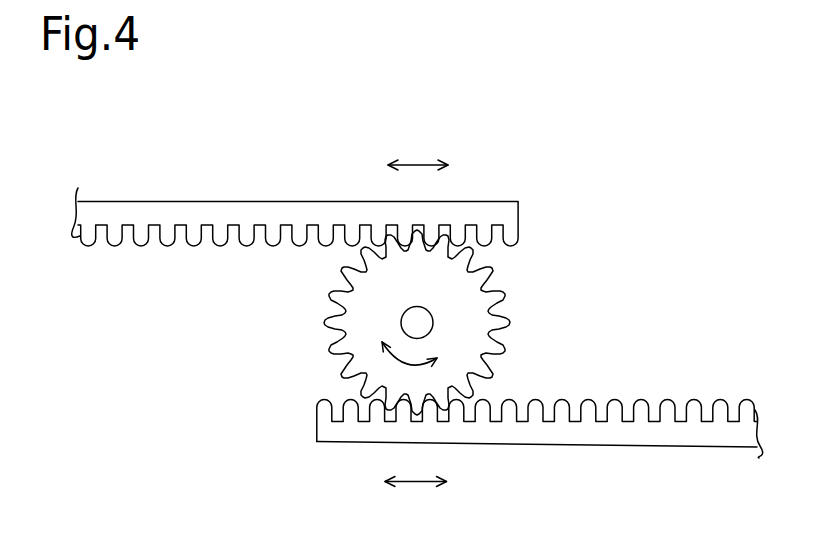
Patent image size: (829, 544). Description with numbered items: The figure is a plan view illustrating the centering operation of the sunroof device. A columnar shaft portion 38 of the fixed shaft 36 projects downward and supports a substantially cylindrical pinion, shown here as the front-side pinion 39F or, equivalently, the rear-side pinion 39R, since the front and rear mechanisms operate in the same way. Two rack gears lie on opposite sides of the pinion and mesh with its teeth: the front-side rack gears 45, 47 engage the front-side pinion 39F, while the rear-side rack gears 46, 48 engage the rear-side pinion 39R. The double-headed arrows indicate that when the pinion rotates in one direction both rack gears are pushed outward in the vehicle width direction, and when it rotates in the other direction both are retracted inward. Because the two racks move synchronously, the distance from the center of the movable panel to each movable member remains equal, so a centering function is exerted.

The fixed shaft 36 is at (418, 318).
The shaft portion 38 is at (501, 300).
The front-side pinion 39F is at (478, 322).
The rear-side pinion 39R is at (472, 337).
The front-side rack gear 45 is at (540, 411).
The rear-side rack gear 46 is at (665, 430).
The front-side rack gear 47 is at (295, 196).
The rear-side rack gear 48 is at (208, 213).